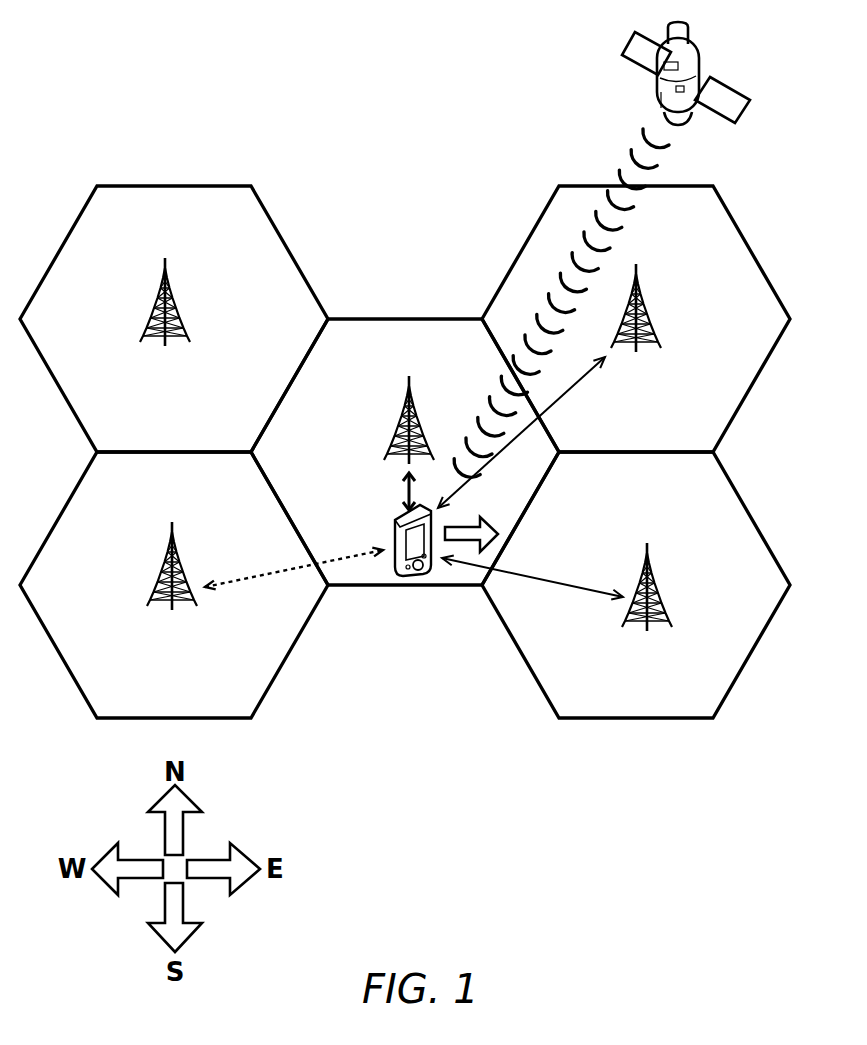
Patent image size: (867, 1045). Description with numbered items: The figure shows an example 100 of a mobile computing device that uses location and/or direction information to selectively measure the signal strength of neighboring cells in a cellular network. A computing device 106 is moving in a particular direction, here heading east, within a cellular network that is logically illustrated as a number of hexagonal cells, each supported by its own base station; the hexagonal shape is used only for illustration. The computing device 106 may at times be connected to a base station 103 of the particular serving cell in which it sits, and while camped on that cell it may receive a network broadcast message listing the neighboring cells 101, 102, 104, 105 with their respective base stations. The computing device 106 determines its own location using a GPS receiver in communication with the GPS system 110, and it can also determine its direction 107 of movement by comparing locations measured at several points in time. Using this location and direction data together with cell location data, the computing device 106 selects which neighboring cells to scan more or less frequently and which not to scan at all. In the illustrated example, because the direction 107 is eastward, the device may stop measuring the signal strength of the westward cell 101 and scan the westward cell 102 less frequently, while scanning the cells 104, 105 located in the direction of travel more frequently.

The example 100 is at (120, 128).
The cell 101 is at (175, 294).
The cell 102 is at (181, 562).
The base station 103 is at (420, 420).
The cell 104 is at (647, 299).
The cell 105 is at (660, 586).
The computing device 106 is at (412, 577).
The direction of movement 107 is at (497, 547).
The GPS system 110 is at (726, 69).